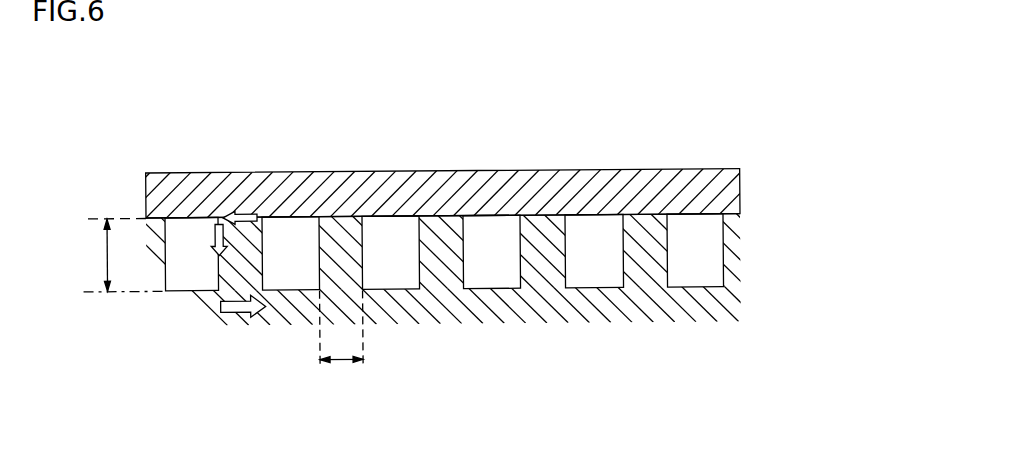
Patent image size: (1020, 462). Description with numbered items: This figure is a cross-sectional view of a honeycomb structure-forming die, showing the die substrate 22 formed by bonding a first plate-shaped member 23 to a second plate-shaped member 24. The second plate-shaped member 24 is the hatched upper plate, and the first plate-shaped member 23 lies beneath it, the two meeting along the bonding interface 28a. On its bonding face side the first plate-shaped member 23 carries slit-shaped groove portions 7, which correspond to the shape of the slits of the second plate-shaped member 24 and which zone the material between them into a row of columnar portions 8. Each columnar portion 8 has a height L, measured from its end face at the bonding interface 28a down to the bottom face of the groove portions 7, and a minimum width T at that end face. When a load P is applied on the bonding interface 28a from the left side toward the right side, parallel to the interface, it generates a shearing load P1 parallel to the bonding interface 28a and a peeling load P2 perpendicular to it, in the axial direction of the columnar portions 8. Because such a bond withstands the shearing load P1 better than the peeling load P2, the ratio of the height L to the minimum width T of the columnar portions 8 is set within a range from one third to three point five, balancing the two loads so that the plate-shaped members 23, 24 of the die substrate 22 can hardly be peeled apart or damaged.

The groove portion 7 is at (707, 272).
The columnar portion 8 is at (440, 285).
The die substrate 22 is at (476, 247).
The first plate-shaped member 23 is at (650, 244).
The second plate-shaped member 24 is at (733, 195).
The bonding interface 28a is at (451, 213).
The shearing load P1 is at (243, 216).
The peeling load P2 is at (216, 237).
The load P is at (243, 309).
The height of the columnar portion L is at (124, 255).
The minimum width of the columnar portion T is at (342, 340).